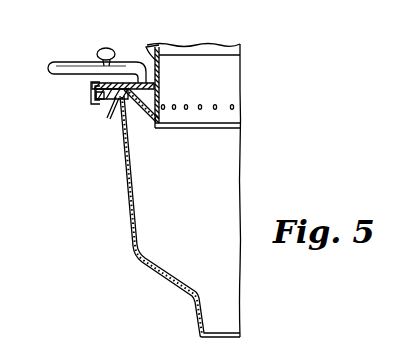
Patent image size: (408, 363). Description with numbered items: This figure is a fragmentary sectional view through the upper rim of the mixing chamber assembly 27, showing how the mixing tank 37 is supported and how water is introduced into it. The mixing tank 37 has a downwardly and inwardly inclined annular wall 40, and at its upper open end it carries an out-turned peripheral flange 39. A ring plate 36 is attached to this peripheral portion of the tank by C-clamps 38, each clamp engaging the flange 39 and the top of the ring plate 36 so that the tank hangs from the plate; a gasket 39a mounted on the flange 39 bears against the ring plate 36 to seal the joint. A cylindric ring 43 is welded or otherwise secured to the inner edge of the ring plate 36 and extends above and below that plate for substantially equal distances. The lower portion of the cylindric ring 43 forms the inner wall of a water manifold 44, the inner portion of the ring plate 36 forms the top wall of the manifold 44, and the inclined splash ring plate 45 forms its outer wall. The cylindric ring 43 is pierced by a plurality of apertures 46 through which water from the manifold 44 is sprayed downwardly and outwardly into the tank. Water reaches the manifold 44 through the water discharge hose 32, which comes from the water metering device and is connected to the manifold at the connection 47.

The mixing chamber assembly 27 is at (131, 249).
The water discharge hose 32 is at (72, 62).
The ring plate 36 is at (118, 102).
The mixing tank 37 is at (127, 198).
The C-clamps 38 is at (90, 88).
The out-turned peripheral flange 39 is at (110, 98).
The gasket 39a is at (97, 100).
The inclined annular wall 40 is at (132, 182).
The cylindric ring 43 is at (158, 77).
The water manifold 44 is at (150, 118).
The inclined splash ring plate 45 is at (125, 110).
The apertures 46 is at (163, 105).
The hose connection 47 is at (137, 60).